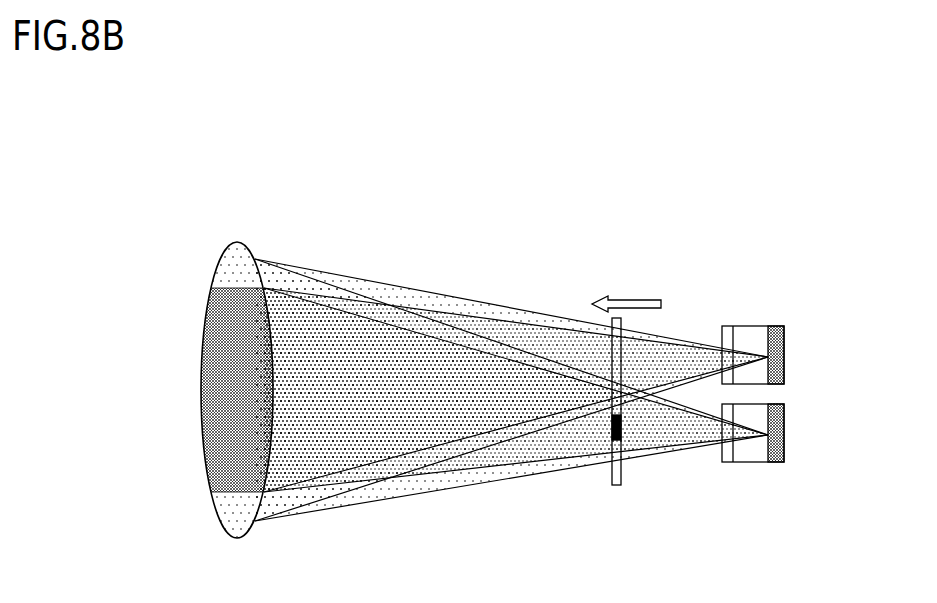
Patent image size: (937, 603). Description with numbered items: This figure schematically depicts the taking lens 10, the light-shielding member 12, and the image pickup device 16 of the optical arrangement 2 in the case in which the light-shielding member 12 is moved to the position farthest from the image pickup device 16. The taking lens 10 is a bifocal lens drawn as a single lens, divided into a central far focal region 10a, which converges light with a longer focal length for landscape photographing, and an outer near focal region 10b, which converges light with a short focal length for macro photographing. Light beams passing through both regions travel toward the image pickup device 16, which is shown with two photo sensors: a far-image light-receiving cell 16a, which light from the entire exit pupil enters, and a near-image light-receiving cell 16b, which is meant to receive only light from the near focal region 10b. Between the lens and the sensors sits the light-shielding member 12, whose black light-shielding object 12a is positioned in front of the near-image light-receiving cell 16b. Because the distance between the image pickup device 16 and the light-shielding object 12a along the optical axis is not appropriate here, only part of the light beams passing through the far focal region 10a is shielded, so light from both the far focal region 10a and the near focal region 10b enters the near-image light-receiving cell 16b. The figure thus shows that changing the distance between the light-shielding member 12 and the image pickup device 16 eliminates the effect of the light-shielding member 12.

The optical device 2 is at (599, 218).
The taking lens 10 is at (240, 243).
The far focal region 10a is at (205, 367).
The near focal region 10b is at (221, 266).
The light-shielding member 12 is at (622, 482).
The light-shielding object 12a is at (614, 441).
The image pickup device 16 is at (781, 367).
The far-image light-receiving cell 16a is at (785, 357).
The near-image light-receiving cell 16b is at (785, 434).